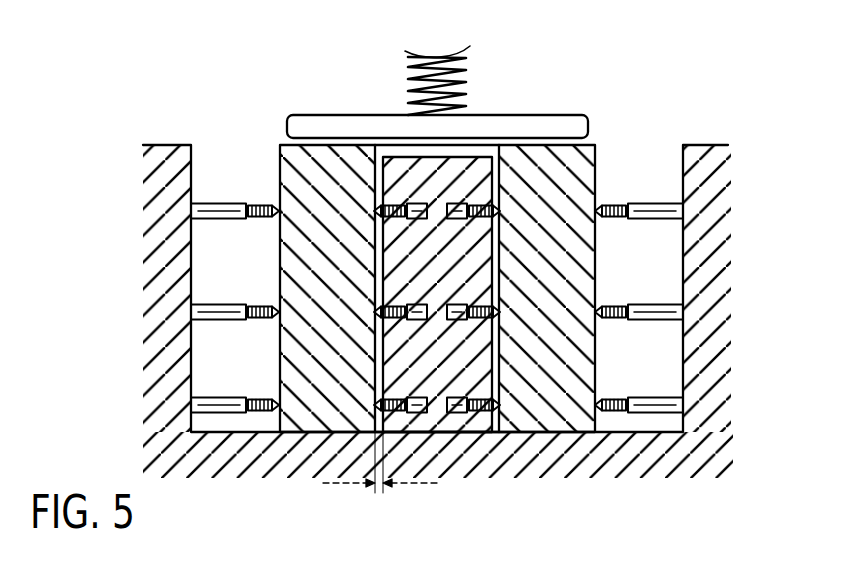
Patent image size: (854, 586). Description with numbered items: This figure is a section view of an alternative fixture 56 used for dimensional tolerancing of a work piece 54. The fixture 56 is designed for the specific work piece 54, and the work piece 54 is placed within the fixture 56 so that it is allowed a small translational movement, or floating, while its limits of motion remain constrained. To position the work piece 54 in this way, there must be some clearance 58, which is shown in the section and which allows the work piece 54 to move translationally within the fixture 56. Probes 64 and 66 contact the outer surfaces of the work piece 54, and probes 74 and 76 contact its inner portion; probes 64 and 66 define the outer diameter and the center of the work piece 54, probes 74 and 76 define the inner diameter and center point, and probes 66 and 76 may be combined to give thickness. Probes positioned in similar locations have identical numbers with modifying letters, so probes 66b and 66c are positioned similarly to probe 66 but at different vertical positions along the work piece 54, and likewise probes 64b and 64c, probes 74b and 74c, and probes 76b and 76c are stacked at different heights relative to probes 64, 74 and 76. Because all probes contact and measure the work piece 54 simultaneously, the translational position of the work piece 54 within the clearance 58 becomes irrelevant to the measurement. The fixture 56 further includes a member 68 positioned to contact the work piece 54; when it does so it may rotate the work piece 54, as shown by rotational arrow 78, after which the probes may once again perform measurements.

The work piece 54 is at (598, 155).
The fixture 56 is at (707, 145).
The clearance 58 is at (380, 486).
The probe 64 is at (654, 203).
The probe 64b is at (653, 304).
The probe 64c is at (655, 397).
The probe 66 is at (221, 203).
The probe 66b is at (222, 304).
The probe 66c is at (224, 397).
The member 68 is at (522, 115).
The probe 74 is at (469, 221).
The probe 74b is at (469, 321).
The probe 74c is at (468, 399).
The probe 76 is at (405, 221).
The probe 76b is at (405, 321).
The probe 76c is at (404, 399).
The rotational arrow 78 is at (428, 45).